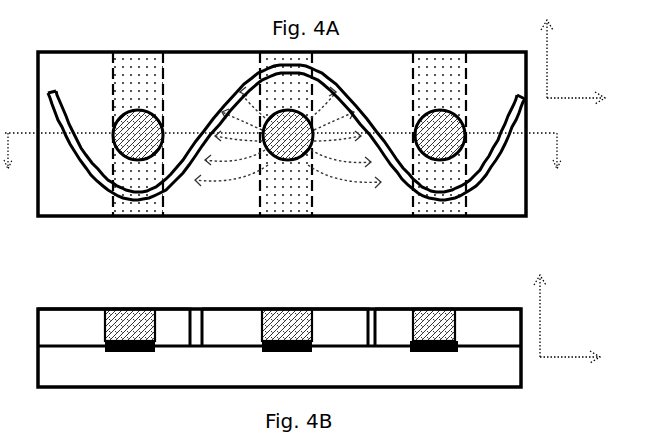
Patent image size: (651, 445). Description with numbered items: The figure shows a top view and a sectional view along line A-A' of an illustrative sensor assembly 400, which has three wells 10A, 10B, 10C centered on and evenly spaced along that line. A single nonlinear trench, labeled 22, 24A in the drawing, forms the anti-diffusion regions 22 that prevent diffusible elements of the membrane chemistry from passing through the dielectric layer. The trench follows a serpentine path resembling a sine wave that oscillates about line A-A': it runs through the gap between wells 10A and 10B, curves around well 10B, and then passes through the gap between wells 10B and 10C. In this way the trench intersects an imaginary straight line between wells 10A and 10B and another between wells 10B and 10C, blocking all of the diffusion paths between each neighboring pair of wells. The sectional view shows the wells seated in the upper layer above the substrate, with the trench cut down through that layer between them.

In FIG. 4A, the sensor assembly 400 is at (83, 33).
In FIG. 4B, the sensor assembly 400 is at (83, 432).
In FIG. 4A, the well 10A is at (116, 157).
In FIG. 4B, the well 10A is at (133, 309).
In FIG. 4A, the well 10B is at (292, 160).
In FIG. 4B, the well 10B is at (287, 309).
In FIG. 4A, the well 10C is at (438, 160).
In FIG. 4B, the well 10C is at (437, 307).
In FIG. 4A, the anti-diffusion region 22 is at (286, 167).
In FIG. 4B, the anti-diffusion region 22 is at (279, 307).
In FIG. 4A, the waveguide layer 24A is at (170, 183).
In FIG. 4B, the waveguide layer 24A is at (200, 345).